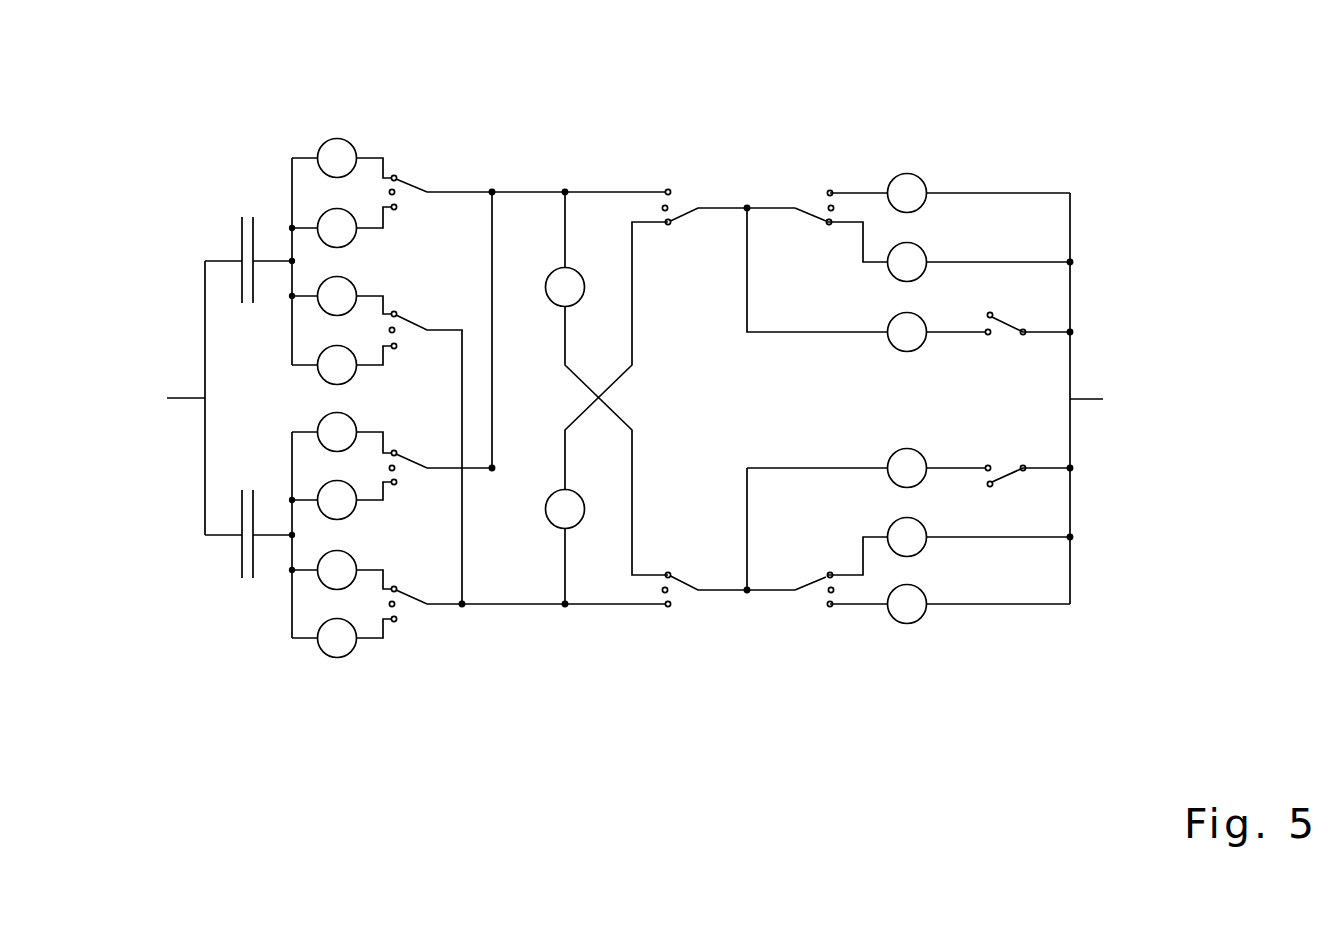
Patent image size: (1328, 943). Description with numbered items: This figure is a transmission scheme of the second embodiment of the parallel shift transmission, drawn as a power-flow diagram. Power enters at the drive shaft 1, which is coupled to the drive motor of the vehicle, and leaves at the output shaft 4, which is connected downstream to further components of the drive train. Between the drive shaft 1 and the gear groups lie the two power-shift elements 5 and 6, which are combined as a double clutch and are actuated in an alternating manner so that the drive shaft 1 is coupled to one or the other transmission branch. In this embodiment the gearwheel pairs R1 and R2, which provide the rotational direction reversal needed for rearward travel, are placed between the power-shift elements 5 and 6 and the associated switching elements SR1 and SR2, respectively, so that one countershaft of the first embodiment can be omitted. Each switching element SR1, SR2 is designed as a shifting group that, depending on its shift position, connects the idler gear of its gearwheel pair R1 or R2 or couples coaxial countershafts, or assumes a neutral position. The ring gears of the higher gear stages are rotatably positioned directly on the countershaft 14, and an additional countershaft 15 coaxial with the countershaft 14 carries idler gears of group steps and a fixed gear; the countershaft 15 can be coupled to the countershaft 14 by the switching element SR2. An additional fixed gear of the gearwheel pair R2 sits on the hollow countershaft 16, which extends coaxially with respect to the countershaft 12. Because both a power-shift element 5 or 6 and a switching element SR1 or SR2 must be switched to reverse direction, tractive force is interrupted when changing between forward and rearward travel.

The drive shaft 1 is at (170, 399).
The output shaft 4 is at (1088, 393).
The power-shift element 5 is at (238, 242).
The power-shift element 6 is at (240, 557).
The countershaft 12 is at (777, 592).
The countershaft 14 is at (445, 188).
The additional countershaft 15 is at (778, 207).
The countershaft 16 is at (452, 608).
The gearwheel pair R1 is at (558, 277).
The gearwheel pair R2 is at (562, 517).
The switching element SR1 is at (688, 590).
The switching element SR2 is at (688, 204).